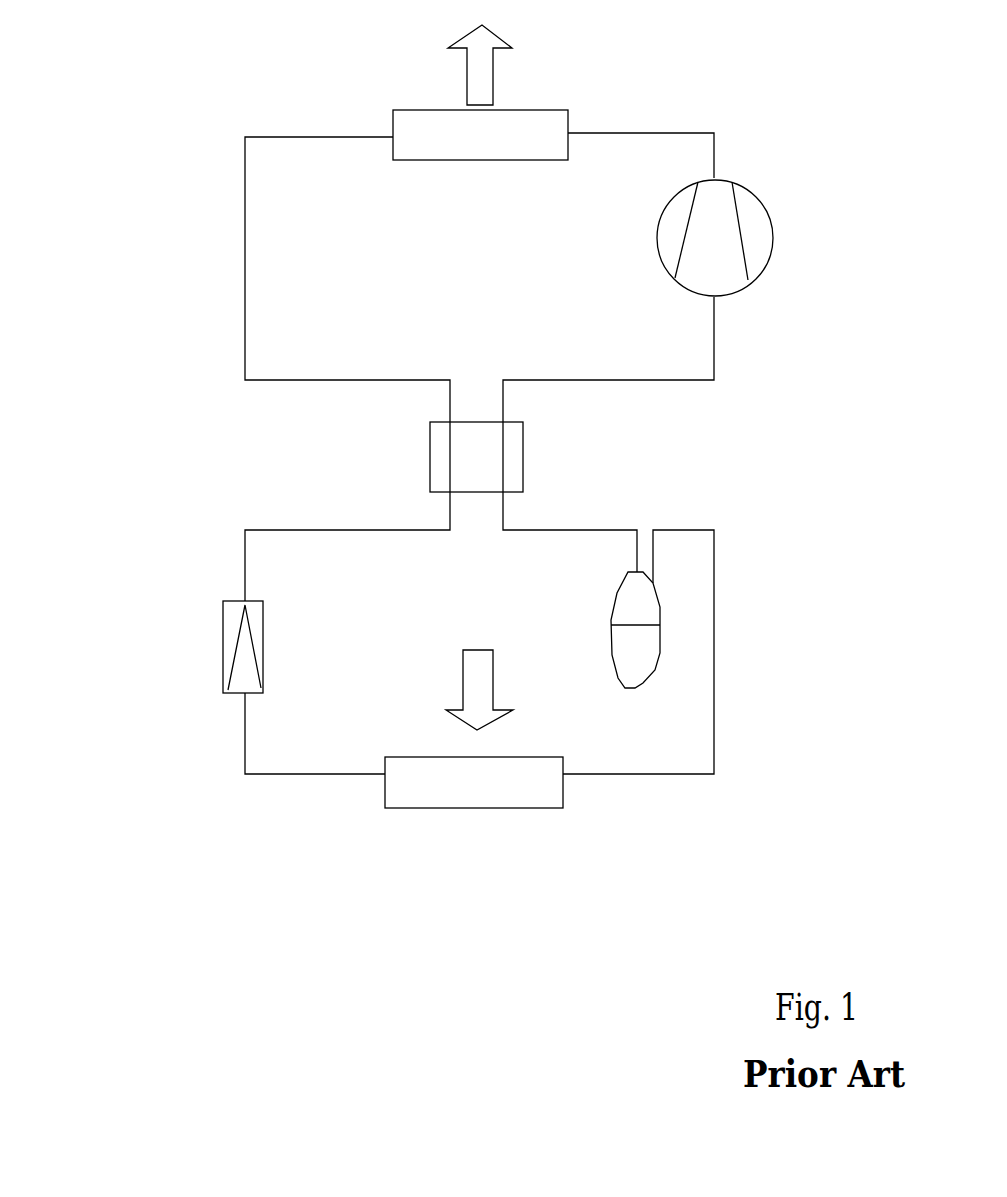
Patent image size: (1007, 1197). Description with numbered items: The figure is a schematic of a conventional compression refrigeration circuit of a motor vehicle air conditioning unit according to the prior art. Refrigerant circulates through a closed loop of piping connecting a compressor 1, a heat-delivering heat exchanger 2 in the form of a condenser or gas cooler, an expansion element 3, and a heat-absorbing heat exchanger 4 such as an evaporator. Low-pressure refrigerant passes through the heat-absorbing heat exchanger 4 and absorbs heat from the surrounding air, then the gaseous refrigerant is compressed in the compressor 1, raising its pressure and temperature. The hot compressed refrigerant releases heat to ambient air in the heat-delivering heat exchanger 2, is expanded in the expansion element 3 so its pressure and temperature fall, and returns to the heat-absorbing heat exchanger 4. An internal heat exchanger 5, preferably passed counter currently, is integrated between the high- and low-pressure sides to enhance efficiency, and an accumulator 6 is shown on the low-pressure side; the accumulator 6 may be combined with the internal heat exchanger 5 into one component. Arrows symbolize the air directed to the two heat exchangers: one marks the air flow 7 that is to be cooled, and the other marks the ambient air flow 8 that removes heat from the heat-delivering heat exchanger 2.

The compressor 1 is at (755, 233).
The heat-delivering heat exchanger 2 is at (540, 132).
The expansion element 3 is at (240, 627).
The heat-absorbing heat exchanger 4 is at (488, 782).
The internal heat exchanger 5 is at (443, 472).
The accumulator 6 is at (637, 650).
The air flow 7 is at (480, 678).
The ambient air flow 8 is at (478, 77).